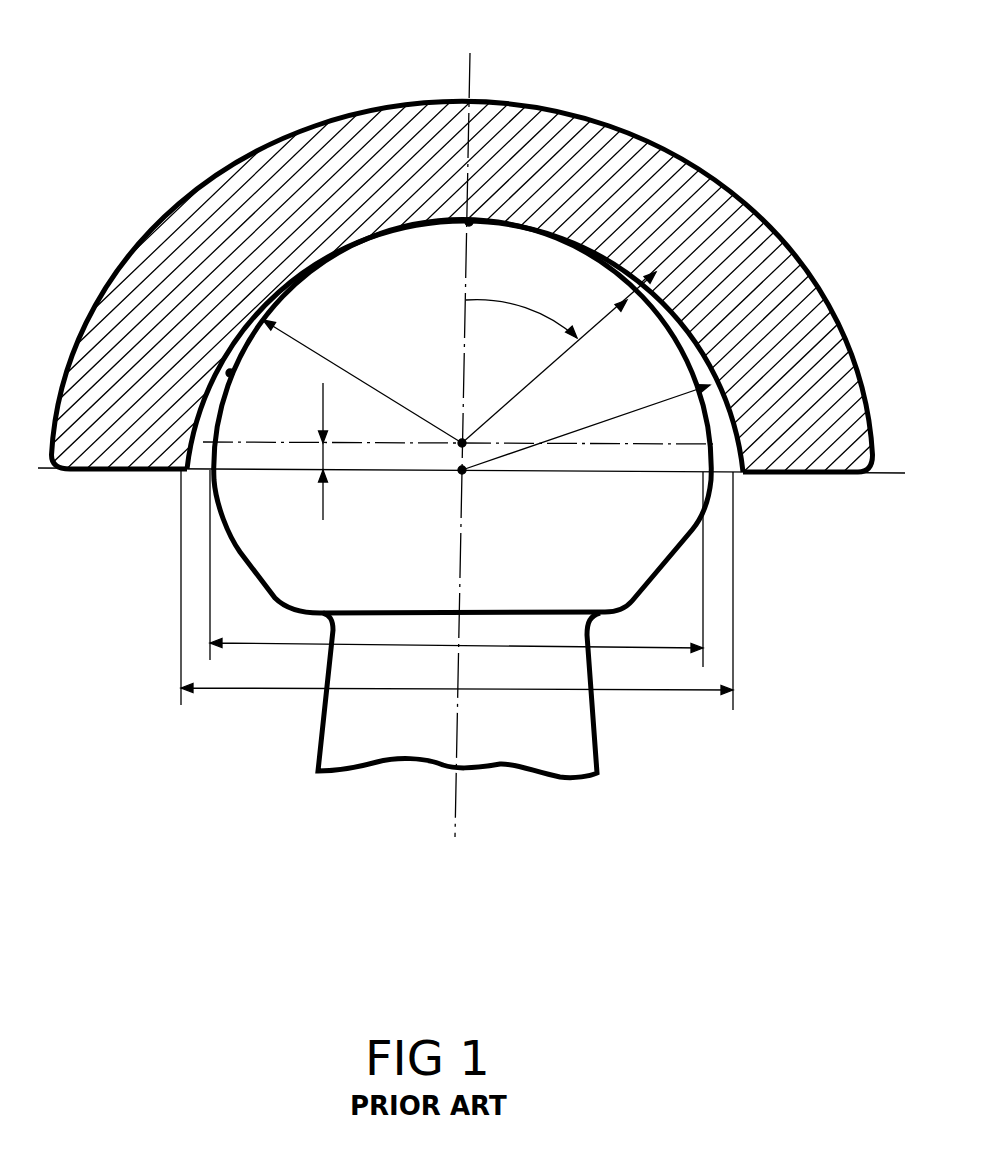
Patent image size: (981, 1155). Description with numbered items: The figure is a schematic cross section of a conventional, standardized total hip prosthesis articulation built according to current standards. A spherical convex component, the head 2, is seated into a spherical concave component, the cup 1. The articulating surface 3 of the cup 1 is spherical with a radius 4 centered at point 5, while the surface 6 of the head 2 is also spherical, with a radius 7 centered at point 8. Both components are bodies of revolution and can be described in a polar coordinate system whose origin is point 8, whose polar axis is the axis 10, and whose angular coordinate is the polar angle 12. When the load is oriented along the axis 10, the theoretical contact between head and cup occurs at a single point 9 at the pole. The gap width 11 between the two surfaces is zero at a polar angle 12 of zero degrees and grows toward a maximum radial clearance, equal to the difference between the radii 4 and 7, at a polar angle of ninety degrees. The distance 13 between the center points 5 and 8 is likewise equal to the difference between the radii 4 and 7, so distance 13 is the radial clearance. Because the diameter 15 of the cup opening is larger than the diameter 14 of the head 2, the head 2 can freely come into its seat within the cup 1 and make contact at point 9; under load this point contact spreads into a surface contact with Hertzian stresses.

The cup 1 is at (370, 128).
The head 2 is at (245, 512).
The articulating surface 3 is at (707, 355).
The radius 4 is at (578, 430).
The point 5 is at (462, 470).
The surface 6 is at (230, 373).
The radius 7 is at (352, 375).
The point 8 is at (462, 443).
The point 9 is at (468, 223).
The axis 10 is at (469, 73).
The gap width 11 is at (656, 272).
The polar angle 12 is at (505, 302).
The distance 13 is at (322, 512).
The diameter 14 is at (300, 643).
The diameter 15 is at (300, 688).